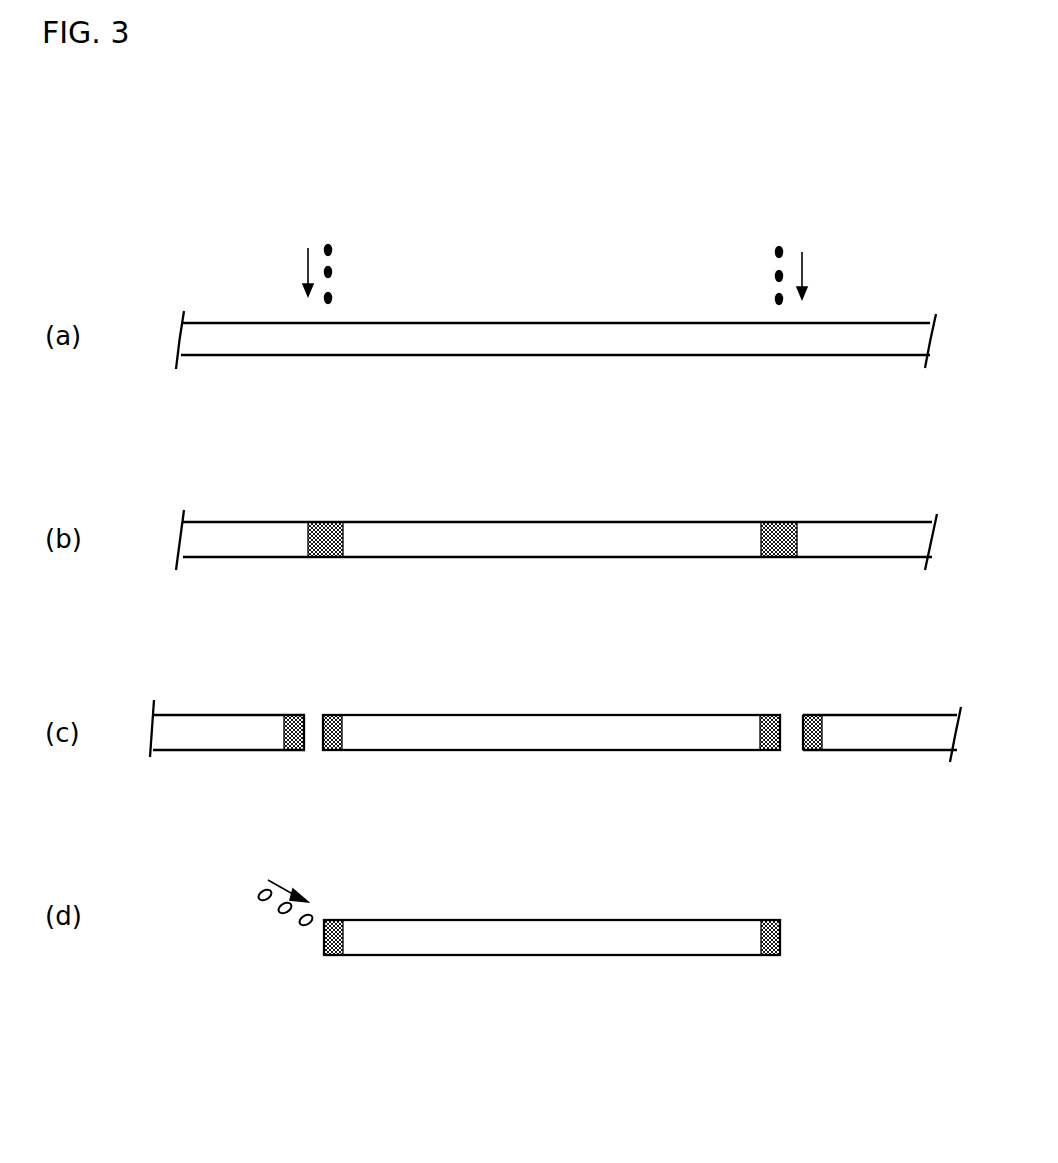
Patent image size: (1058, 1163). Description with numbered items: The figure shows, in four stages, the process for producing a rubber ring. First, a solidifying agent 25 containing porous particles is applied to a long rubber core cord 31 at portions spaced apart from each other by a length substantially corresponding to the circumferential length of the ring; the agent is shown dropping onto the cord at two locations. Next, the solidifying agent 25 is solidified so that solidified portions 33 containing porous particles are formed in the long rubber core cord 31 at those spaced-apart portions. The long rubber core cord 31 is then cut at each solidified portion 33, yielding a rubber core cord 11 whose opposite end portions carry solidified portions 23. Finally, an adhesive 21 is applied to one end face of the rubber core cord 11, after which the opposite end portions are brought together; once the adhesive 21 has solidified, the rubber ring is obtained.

The rubber core cord 11 is at (551, 714).
The adhesive 21 is at (283, 914).
The solidified portions 23 is at (294, 714).
The solidifying agent 25 is at (334, 271).
The long rubber core cord 31 is at (540, 322).
The solidified portions 33 is at (327, 522).